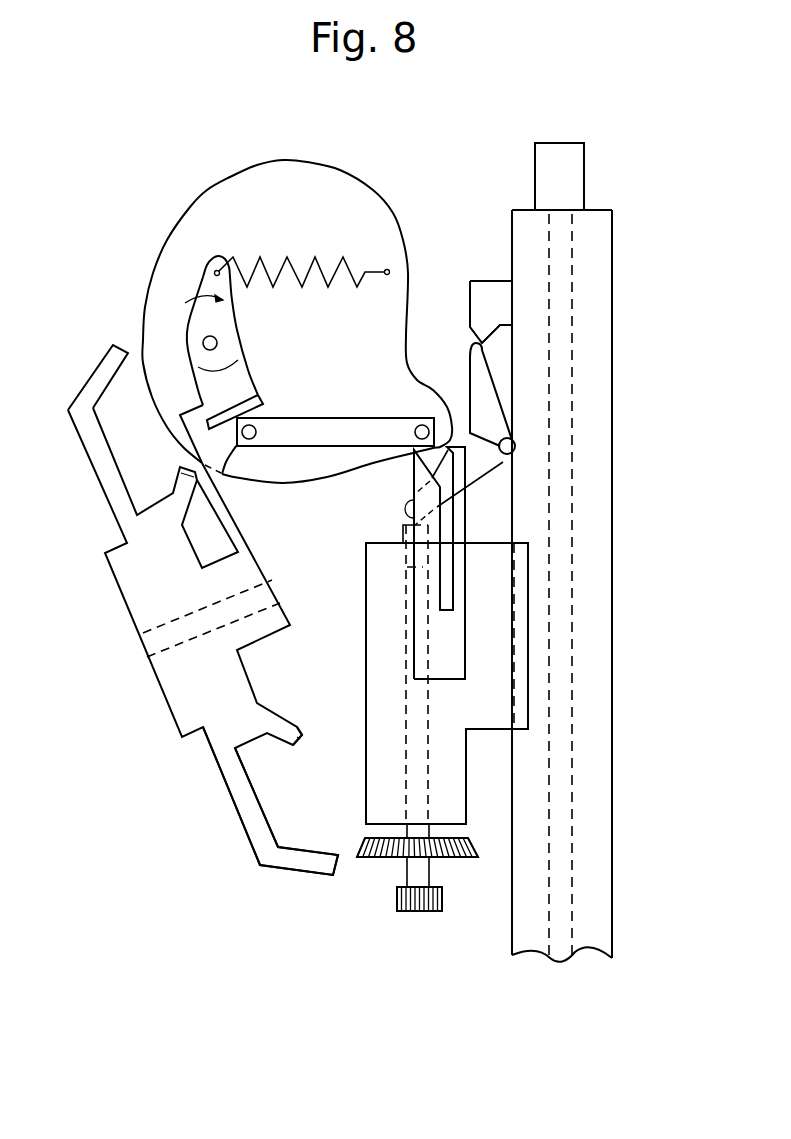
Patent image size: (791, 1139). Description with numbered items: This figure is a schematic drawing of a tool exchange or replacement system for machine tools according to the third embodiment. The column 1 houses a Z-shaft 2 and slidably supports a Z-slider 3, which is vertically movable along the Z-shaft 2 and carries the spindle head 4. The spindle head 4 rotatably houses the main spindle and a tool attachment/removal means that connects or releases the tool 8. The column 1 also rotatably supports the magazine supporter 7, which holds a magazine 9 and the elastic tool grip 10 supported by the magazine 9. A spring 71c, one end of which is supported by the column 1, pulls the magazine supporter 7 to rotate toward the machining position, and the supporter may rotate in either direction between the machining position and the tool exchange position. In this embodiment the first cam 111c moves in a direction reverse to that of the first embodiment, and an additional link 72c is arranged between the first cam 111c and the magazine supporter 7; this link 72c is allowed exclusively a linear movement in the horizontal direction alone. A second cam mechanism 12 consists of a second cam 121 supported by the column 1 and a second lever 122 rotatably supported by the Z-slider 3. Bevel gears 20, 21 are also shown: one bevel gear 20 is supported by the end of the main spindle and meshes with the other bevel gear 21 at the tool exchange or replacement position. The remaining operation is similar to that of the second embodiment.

The column 1 is at (202, 207).
The Z-shaft 2 is at (566, 311).
The Z-slider 3 is at (493, 710).
The spindle head 4 is at (457, 813).
The magazine supporter 7 is at (247, 383).
The tool 8 is at (420, 912).
The magazine 9 is at (133, 618).
The elastic tool grip 10 is at (98, 372).
The second cam mechanism 12 is at (437, 268).
The bevel gear 20 is at (458, 856).
The bevel gear 21 is at (300, 742).
The spring 71c is at (298, 250).
The additional link 72c is at (337, 415).
The first cam 111c is at (447, 672).
The second cam 121 is at (485, 303).
The second lever 122 is at (477, 372).